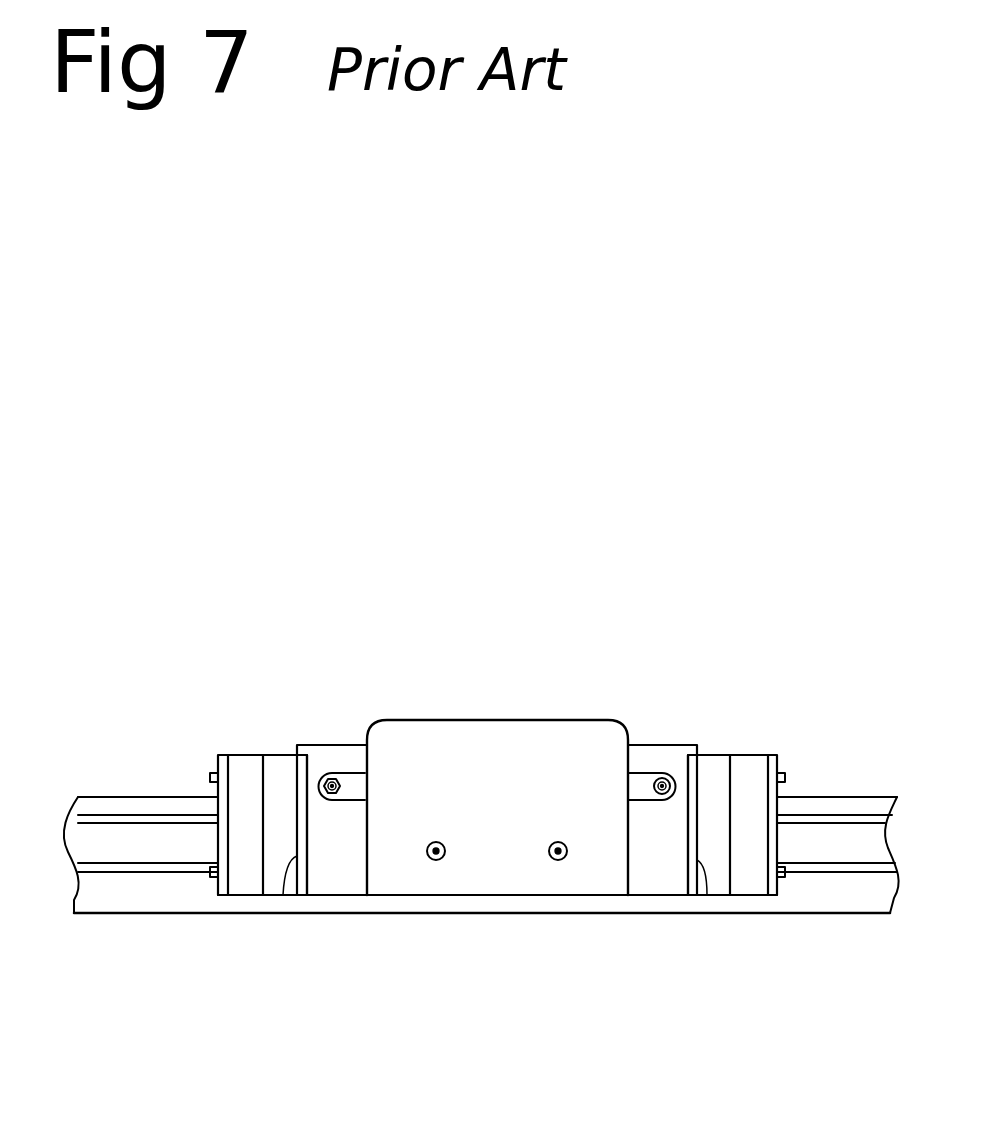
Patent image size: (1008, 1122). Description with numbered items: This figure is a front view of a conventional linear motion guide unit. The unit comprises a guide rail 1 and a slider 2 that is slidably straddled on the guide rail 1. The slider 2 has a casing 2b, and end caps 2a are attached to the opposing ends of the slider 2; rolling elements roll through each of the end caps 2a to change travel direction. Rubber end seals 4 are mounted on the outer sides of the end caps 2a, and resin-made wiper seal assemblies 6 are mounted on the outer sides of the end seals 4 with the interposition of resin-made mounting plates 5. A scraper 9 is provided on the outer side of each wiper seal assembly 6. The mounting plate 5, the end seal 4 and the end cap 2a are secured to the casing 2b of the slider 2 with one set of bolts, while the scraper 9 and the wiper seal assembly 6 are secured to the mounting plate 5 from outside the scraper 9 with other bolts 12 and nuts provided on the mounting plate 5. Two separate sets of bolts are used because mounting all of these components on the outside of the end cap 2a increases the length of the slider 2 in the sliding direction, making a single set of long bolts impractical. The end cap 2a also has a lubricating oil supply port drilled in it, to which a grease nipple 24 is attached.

The guide rail 1 is at (840, 810).
The slider 2 is at (488, 829).
The end cap 2a is at (328, 762).
The casing 2b is at (458, 741).
The end seal 4 is at (283, 895).
The mounting plate 5 is at (273, 885).
The wiper seal assembly 6 is at (245, 765).
The scraper 9 is at (223, 893).
The bolt 12 is at (205, 772).
The grease nipple 24 is at (333, 800).